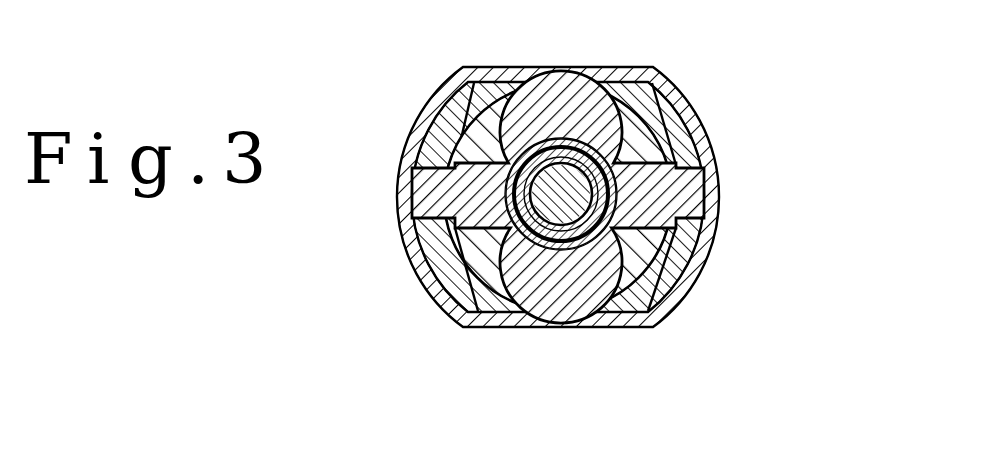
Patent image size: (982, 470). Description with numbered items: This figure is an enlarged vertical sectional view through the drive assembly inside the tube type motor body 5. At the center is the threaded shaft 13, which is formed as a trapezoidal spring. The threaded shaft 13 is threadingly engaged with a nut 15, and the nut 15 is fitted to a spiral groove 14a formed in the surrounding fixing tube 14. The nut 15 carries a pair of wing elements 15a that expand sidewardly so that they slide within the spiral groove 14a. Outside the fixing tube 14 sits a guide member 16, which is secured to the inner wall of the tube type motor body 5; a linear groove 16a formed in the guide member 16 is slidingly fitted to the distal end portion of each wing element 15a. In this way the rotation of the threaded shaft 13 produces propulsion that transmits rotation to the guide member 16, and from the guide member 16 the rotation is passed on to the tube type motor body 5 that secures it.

The tube type motor body 5 is at (630, 85).
The threaded shaft 13 is at (569, 212).
The fixing tube 14 is at (547, 105).
The spiral groove 14a is at (693, 250).
The nut 15 is at (554, 252).
The wing element 15a is at (448, 165).
The guide member 16 is at (675, 112).
The linear groove 16a is at (698, 137).